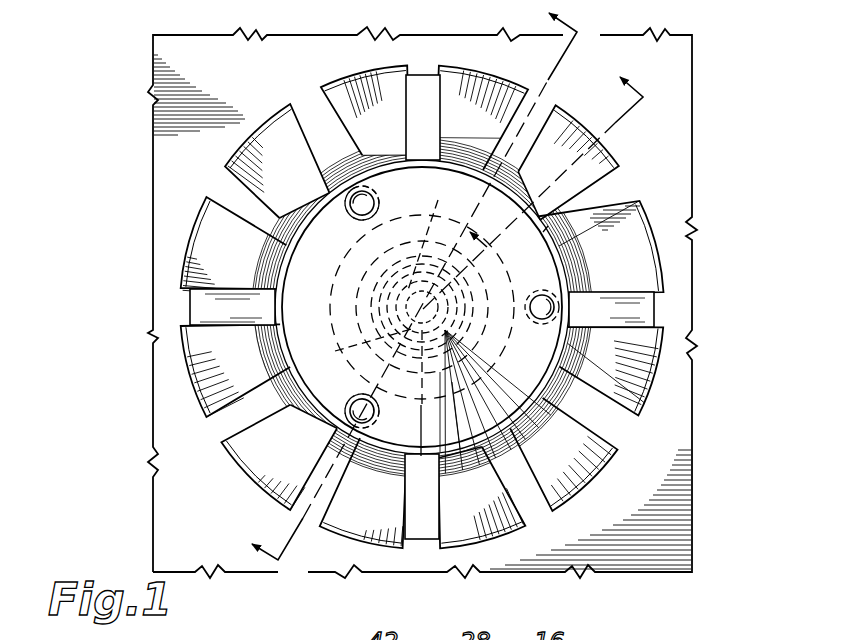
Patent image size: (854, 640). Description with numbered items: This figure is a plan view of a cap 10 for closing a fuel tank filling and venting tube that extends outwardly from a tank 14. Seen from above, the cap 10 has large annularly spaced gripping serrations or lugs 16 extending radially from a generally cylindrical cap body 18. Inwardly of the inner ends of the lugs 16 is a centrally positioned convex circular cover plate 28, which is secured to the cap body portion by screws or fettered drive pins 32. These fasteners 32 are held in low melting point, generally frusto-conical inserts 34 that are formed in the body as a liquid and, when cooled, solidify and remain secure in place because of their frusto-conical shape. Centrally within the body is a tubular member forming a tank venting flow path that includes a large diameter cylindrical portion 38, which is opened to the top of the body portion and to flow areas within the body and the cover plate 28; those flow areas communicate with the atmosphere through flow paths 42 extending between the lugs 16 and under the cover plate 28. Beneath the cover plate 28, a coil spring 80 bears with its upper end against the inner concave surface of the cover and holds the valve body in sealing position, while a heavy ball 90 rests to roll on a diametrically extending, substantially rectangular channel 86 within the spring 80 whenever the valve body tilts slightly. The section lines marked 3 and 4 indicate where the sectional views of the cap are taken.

The section line 3- 3 is at (399, 282).
The section line 4- 4 is at (533, 180).
The cap 10 is at (656, 210).
The tank 14 is at (667, 432).
The gripping serrations or lugs 16 is at (640, 272).
The cap body 18 is at (653, 310).
The cover plate 28 is at (320, 294).
The screws or fettered drive pins 32 is at (375, 197).
The inserts 34 is at (348, 222).
The large diameter cylindrical portion 38 is at (546, 230).
The flow paths 42 is at (613, 440).
The coil spring 80 is at (437, 231).
The channel 86 is at (360, 345).
The ball 90 is at (434, 316).